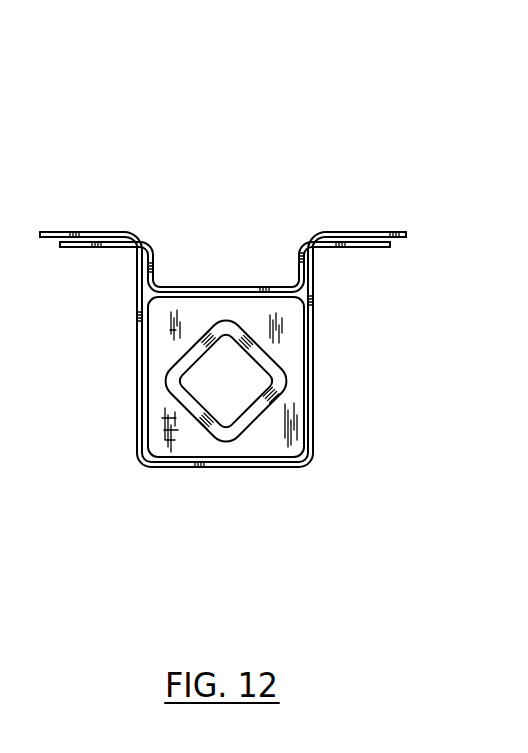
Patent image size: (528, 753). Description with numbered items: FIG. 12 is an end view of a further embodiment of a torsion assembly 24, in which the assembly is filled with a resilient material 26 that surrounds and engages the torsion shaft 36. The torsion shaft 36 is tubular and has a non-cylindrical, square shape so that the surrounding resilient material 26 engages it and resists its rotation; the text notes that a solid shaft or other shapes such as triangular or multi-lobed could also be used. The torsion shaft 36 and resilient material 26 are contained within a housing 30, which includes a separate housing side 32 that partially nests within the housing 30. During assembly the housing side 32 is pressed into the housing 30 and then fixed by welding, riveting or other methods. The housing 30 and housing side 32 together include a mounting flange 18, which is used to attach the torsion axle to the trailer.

The mounting flange 18 is at (428, 257).
The torsion assembly 24 is at (254, 110).
The resilient material 26 is at (277, 442).
The housing 30 is at (314, 348).
The housing side 32 is at (194, 289).
The torsion shaft 36 is at (166, 382).